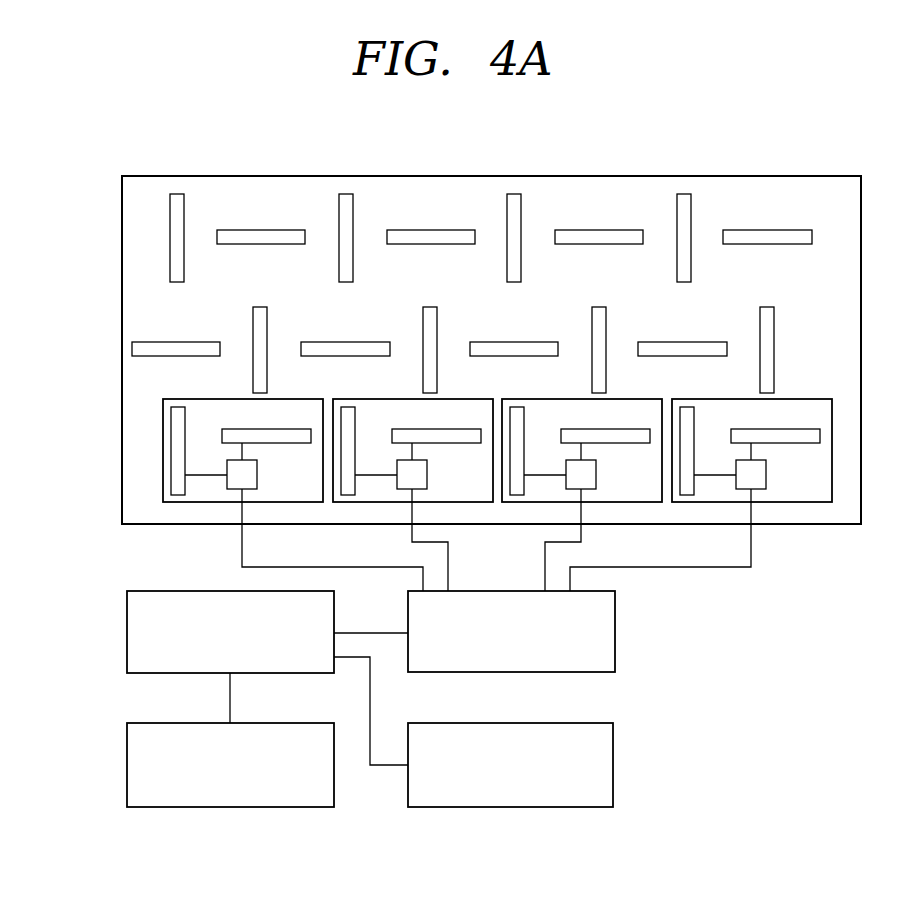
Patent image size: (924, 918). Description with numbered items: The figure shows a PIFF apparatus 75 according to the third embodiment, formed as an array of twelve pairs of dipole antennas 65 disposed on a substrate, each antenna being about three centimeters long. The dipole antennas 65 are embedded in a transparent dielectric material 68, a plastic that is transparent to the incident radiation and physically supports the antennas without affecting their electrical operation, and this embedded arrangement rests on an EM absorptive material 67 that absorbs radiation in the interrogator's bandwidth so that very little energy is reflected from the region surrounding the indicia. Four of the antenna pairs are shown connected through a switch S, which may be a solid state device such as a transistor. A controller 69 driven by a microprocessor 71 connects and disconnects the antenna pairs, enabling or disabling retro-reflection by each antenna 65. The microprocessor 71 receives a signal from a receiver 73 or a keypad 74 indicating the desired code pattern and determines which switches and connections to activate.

The dipole antennas 65 is at (343, 210).
The EM absorptive material 67 is at (536, 445).
The transparent dielectric material 68 is at (214, 404).
The controller 69 is at (594, 660).
The microprocessor 71 is at (150, 598).
The receiver 73 is at (157, 732).
The keypad 74 is at (592, 746).
The PIFF apparatus 75 is at (467, 173).